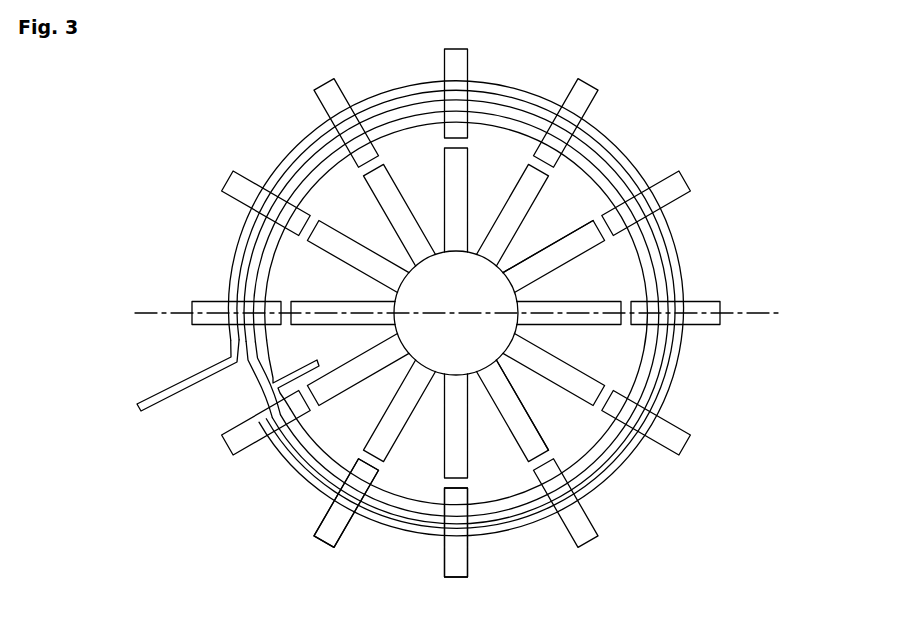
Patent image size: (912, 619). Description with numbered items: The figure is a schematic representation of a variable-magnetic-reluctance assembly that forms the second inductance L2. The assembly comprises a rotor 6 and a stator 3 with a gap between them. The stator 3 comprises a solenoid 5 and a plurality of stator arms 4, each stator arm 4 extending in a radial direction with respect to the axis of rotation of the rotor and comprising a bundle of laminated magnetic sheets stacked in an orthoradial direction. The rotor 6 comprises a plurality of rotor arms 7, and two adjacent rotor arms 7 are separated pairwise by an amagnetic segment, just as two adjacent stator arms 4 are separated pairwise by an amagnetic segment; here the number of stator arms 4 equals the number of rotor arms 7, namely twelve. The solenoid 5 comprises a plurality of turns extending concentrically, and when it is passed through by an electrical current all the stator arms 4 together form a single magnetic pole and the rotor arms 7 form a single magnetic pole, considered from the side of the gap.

The stator 3 is at (612, 514).
The stator arms 4 is at (324, 520).
The solenoid 5 is at (690, 388).
The rotor 6 is at (543, 231).
The rotor arms 7 is at (369, 186).
The second inductance L2 is at (745, 179).